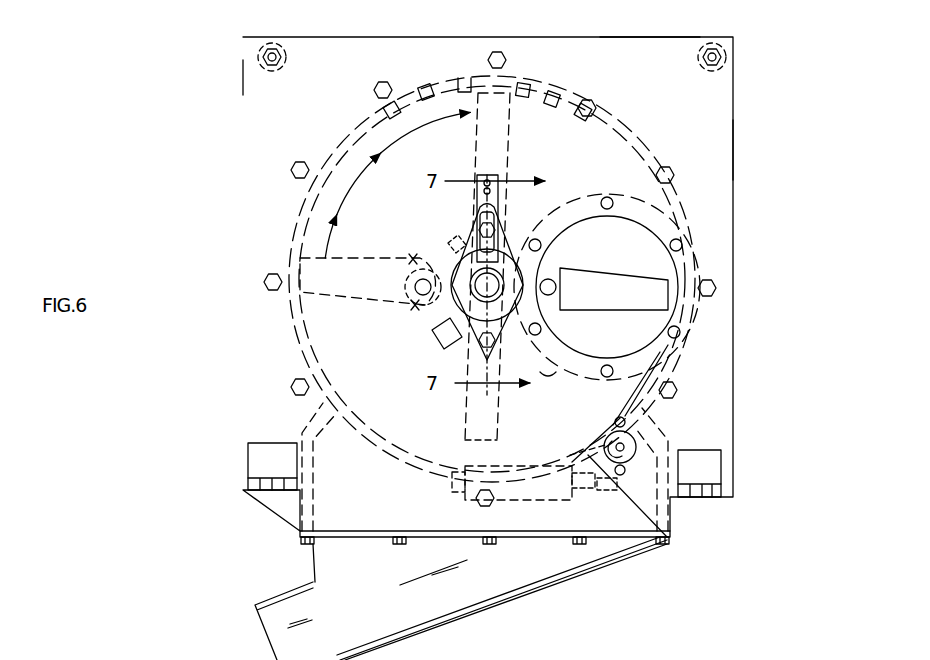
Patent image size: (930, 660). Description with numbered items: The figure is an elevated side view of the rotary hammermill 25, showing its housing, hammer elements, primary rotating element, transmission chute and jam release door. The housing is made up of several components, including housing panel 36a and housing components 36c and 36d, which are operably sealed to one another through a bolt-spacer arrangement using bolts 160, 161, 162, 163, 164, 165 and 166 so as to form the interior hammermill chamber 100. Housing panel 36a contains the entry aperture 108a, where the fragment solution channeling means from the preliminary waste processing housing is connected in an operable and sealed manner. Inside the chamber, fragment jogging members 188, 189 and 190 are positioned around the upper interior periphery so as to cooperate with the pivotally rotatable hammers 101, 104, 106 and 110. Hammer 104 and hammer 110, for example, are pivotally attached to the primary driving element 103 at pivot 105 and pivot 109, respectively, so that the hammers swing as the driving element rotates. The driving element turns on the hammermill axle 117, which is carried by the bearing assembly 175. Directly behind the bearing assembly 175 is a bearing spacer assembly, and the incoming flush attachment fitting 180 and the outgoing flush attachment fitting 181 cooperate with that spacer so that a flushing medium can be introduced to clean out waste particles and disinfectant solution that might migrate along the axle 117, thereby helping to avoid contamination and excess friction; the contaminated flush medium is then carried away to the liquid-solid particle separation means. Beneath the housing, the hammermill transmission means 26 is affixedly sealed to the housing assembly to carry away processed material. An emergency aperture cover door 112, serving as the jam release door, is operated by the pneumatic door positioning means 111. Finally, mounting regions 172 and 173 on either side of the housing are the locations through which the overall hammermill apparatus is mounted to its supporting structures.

The hammermill 25 is at (322, 32).
The hammermill transmission means 26 is at (463, 583).
The housing panel 36a is at (640, 60).
The housing component 36c is at (738, 150).
The housing component 36d is at (241, 76).
The interior hammermill chamber 100 is at (452, 456).
The hammer 101 is at (495, 130).
The primary driving element 103 is at (540, 372).
The hammer 104 is at (655, 298).
The pivot 105 is at (552, 283).
The hammer 106 is at (475, 440).
The entry aperture 108a is at (658, 232).
The pivot 109 is at (415, 306).
The hammer 110 is at (333, 277).
The pneumatic door positioning means 111 is at (550, 487).
The emergency aperture cover door 112 is at (672, 505).
The hammermill axle 117 is at (477, 277).
The bolt 160 is at (275, 52).
The bolt 161 is at (722, 58).
The bolt 162 is at (265, 283).
The bolt 163 is at (677, 391).
The bolt 164 is at (297, 172).
The bolt 165 is at (380, 90).
The bolt 166 is at (293, 389).
The mounting region 172 is at (265, 455).
The mounting region 173 is at (708, 465).
The bearing assembly 175 is at (512, 253).
The incoming flush attachment fitting 180 is at (458, 245).
The outgoing flush attachment fitting 181 is at (440, 345).
The fragment jogging member 188 is at (396, 102).
The fragment jogging member 189 is at (428, 85).
The fragment jogging member 190 is at (466, 78).